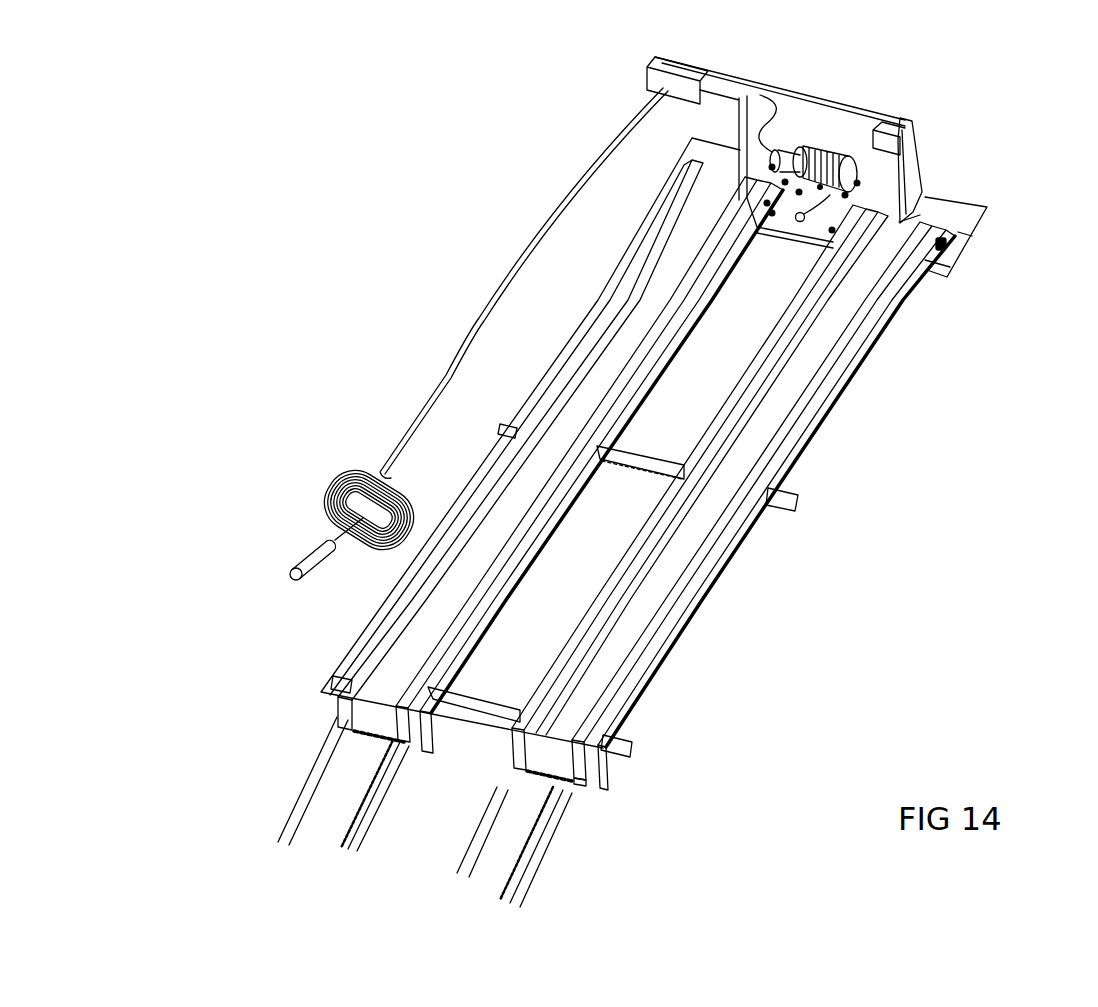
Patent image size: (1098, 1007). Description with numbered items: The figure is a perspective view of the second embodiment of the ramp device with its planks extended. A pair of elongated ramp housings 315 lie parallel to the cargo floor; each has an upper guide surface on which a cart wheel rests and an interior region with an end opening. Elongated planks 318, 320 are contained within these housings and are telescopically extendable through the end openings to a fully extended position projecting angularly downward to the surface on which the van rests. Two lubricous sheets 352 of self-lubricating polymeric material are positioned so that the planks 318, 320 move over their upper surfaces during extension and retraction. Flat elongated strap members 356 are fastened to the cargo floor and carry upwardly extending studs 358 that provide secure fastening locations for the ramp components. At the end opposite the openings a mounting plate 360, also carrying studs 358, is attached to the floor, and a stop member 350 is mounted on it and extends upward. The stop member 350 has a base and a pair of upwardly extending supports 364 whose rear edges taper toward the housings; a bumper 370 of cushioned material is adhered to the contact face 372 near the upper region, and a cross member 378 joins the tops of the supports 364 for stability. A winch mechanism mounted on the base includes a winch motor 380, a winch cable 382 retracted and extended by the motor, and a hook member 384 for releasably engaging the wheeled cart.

The elongated ramp housing 315 is at (525, 553).
The elongated plank 318 is at (300, 792).
The elongated plank 320 is at (580, 782).
The stop member 350 is at (838, 148).
The lubricous sheet 352 is at (415, 748).
The elongated strap member 356 is at (640, 460).
The upwardly extending stud 358 is at (945, 244).
The mounting plate 360 is at (968, 222).
The upwardly extending support 364 is at (695, 127).
The bumper 370 is at (892, 128).
The contact face 372 is at (744, 97).
The cross member 378 is at (838, 113).
The winch motor 380 is at (792, 145).
The winch cable 382 is at (832, 158).
The hook member 384 is at (797, 221).